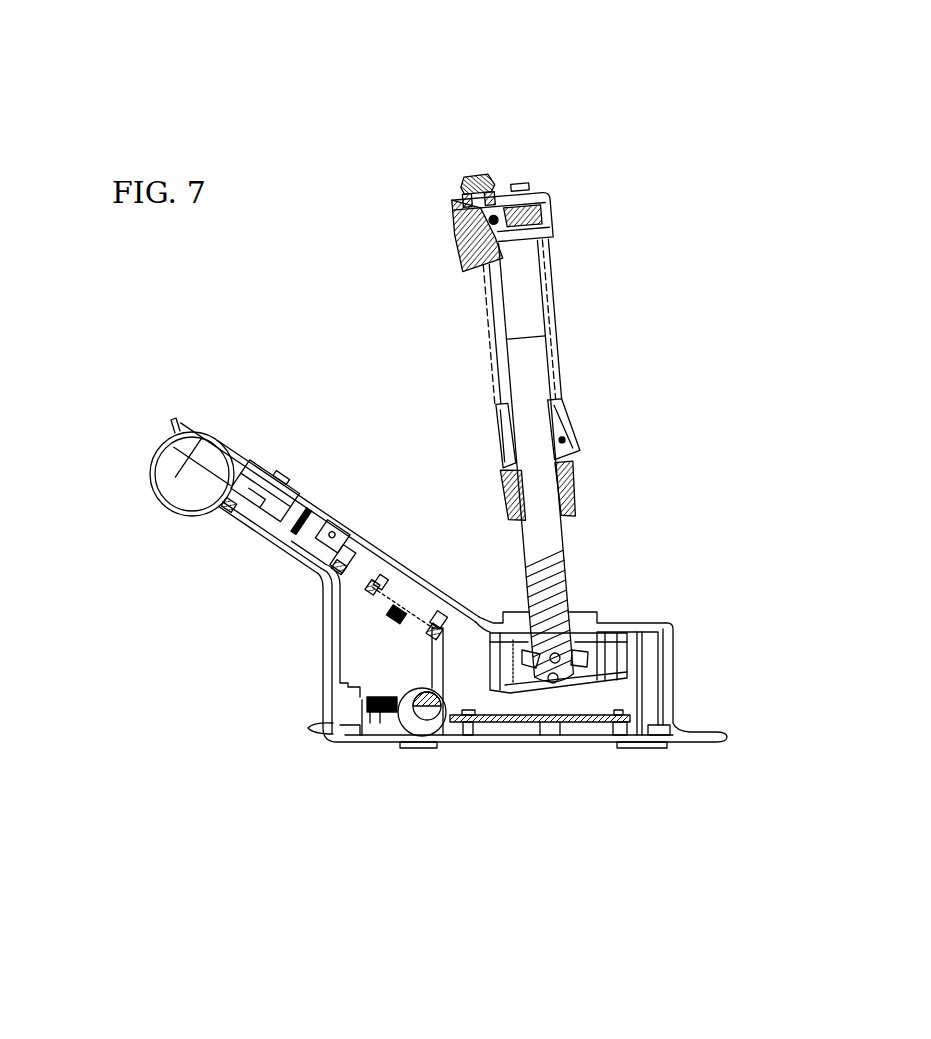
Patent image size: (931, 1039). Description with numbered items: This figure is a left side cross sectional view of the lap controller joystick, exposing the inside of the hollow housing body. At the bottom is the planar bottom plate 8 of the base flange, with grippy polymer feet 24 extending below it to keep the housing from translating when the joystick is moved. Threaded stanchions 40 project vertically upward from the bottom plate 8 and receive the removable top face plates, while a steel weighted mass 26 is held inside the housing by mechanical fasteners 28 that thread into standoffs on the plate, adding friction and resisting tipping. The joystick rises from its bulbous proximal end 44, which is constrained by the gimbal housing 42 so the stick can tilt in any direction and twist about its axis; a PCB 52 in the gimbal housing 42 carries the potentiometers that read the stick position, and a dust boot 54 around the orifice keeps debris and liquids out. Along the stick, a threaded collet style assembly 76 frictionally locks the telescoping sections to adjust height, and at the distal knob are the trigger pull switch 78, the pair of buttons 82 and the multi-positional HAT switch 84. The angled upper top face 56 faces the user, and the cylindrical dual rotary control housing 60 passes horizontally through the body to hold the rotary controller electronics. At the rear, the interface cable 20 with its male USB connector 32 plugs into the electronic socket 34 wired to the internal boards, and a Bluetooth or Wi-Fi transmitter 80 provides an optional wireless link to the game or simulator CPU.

The bottom plate 8 is at (560, 742).
The interface cable 20 is at (315, 727).
The feet 24 is at (638, 752).
The weighted mass 26 is at (536, 724).
The mechanical fasteners 28 is at (587, 724).
The male USB connector 32 is at (352, 738).
The electronic socket 34 is at (382, 697).
The threaded stanchions 40 is at (440, 658).
The gimbal housing 42 is at (620, 660).
The bulbous proximal end 44 is at (572, 640).
The PCB 52 is at (617, 680).
The dust boot 54 is at (511, 614).
The upper top face 56 is at (283, 468).
The dual rotary control housing 60 is at (150, 478).
The threaded collet style assembly 76 is at (575, 480).
The trigger pull switch 78 is at (468, 240).
The transmitter 80 is at (450, 742).
The buttons 82 is at (521, 186).
The HAT switch 84 is at (488, 174).